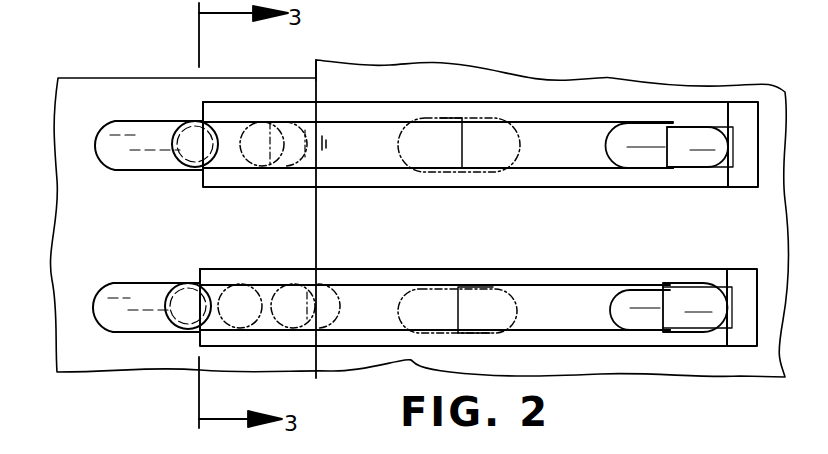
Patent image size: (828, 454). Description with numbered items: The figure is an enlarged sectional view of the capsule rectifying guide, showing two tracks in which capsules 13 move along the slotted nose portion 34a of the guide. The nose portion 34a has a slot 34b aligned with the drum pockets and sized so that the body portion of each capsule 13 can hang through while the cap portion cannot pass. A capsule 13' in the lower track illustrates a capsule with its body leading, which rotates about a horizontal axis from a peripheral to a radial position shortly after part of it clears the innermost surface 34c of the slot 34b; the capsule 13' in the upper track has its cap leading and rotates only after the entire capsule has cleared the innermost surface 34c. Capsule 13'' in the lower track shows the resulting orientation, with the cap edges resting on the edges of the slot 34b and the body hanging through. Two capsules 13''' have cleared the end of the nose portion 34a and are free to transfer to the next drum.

The capsule 13 is at (459, 225).
The capsule rotating to radial position 13' is at (320, 181).
The capsule resting on slot edges 13'' is at (201, 206).
The capsule cleared of guide 13''' is at (159, 283).
The nose portion 34a is at (222, 100).
The slot 34b is at (250, 120).
The innermost surface 34c is at (313, 143).